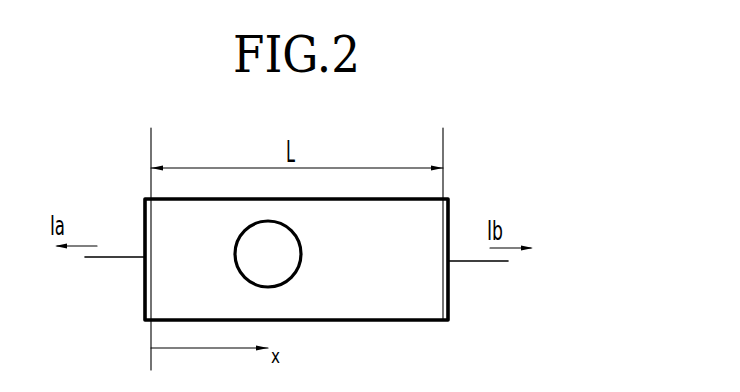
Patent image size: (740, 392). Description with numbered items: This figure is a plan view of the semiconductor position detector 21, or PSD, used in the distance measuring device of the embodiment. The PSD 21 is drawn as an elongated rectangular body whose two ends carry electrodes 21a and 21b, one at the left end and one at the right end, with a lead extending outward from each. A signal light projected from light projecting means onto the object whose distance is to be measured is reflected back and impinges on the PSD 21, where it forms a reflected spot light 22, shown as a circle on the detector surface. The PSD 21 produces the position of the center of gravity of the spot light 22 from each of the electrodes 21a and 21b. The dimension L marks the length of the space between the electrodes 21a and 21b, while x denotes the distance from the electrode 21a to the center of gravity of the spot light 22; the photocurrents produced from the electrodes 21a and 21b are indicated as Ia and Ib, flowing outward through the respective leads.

The semiconductor position detector 21 is at (418, 310).
The electrode 21a is at (145, 215).
The electrode 21b is at (450, 218).
The reflected spot light 22 is at (295, 268).